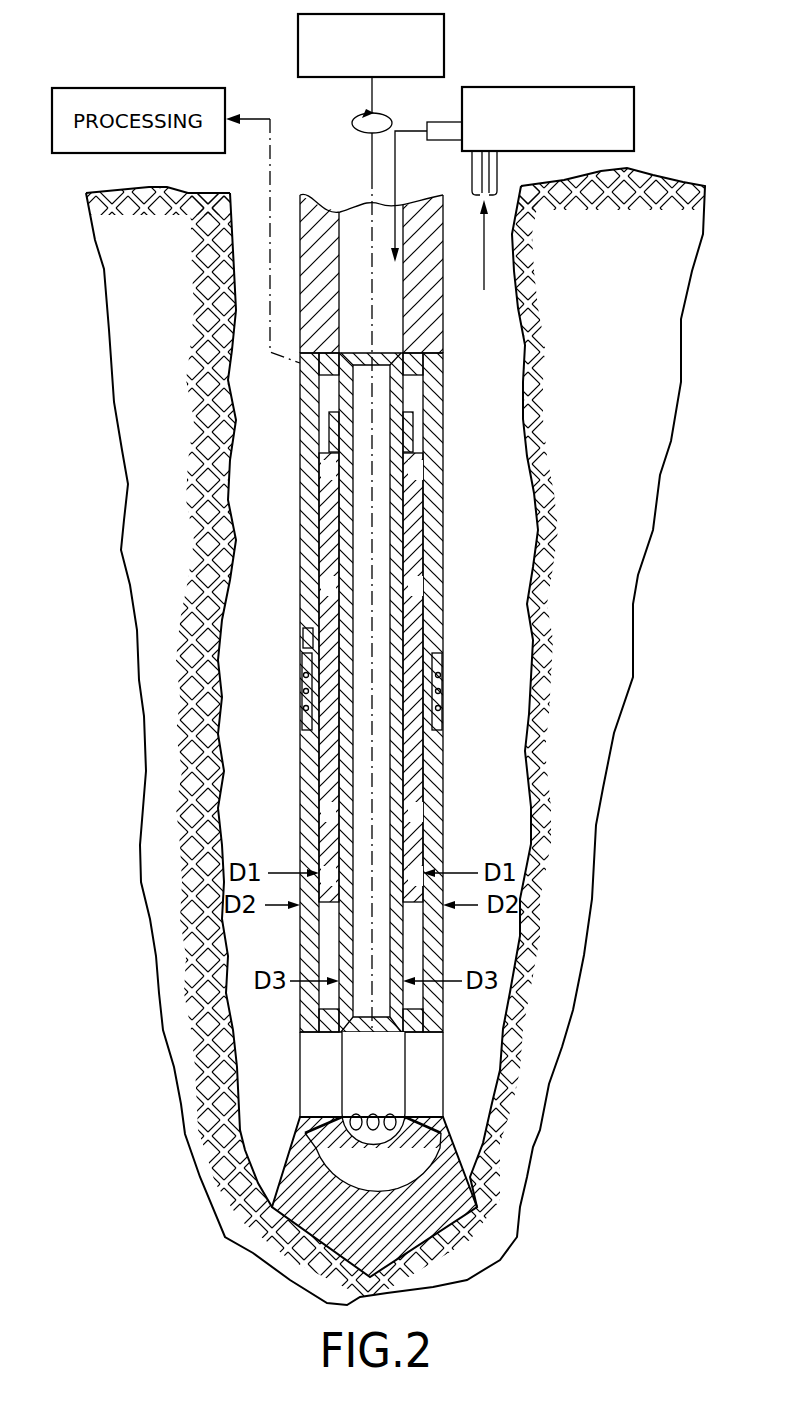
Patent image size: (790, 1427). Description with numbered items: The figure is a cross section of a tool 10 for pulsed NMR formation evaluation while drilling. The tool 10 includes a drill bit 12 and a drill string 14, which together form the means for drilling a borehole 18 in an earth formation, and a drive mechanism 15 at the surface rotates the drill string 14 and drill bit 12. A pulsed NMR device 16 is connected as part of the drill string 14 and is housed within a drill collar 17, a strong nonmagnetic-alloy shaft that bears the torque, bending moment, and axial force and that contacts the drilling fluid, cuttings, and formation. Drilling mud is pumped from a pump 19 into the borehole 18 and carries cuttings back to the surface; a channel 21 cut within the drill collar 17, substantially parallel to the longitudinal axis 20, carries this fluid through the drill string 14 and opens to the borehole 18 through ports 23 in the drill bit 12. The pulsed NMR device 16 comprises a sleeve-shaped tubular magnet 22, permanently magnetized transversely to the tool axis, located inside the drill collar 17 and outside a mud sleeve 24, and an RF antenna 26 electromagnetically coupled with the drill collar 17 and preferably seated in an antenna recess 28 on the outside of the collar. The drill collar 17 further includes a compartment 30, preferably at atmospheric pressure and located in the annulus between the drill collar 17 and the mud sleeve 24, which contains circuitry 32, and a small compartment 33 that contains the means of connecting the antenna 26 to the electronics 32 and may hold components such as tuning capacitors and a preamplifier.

The tool 10 is at (652, 345).
The drill bit 12 is at (287, 1163).
The drill string 14 is at (443, 346).
The drive mechanism 15 is at (298, 40).
The pulsed NMR device 16 is at (518, 595).
The drill collar 17 is at (437, 558).
The borehole 18 is at (525, 751).
The pump 19 is at (637, 113).
The longitudinal axis 20 is at (369, 176).
The channel 21 is at (363, 470).
The magnet 22 is at (330, 548).
The ports 23 is at (418, 1130).
The mud sleeve 24 is at (360, 772).
The RF antenna 26 is at (303, 691).
The antenna recess 28 is at (305, 725).
The compartment 30 is at (328, 385).
The circuitry 32 is at (413, 437).
The small compartment 33 is at (303, 635).